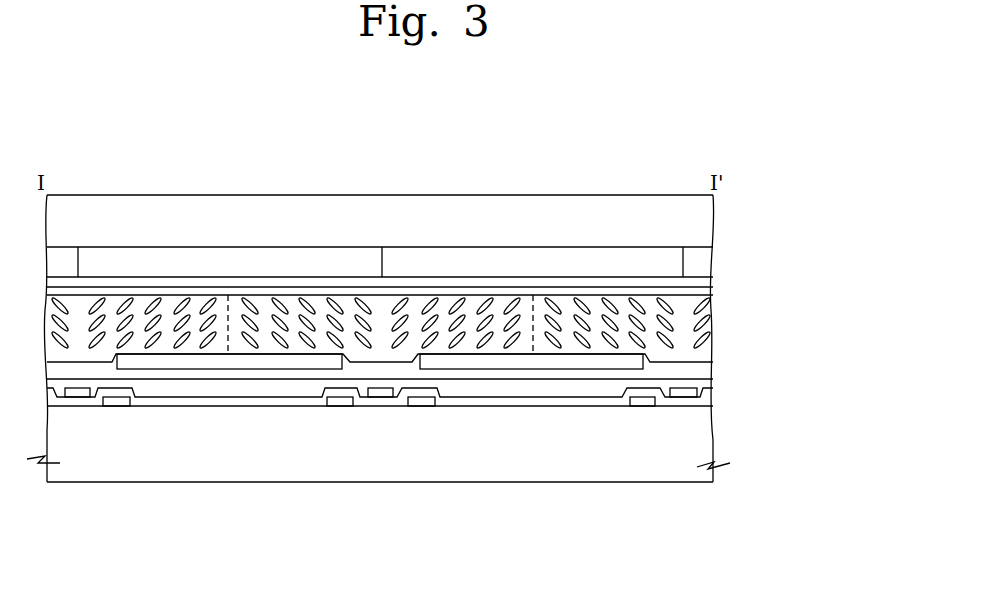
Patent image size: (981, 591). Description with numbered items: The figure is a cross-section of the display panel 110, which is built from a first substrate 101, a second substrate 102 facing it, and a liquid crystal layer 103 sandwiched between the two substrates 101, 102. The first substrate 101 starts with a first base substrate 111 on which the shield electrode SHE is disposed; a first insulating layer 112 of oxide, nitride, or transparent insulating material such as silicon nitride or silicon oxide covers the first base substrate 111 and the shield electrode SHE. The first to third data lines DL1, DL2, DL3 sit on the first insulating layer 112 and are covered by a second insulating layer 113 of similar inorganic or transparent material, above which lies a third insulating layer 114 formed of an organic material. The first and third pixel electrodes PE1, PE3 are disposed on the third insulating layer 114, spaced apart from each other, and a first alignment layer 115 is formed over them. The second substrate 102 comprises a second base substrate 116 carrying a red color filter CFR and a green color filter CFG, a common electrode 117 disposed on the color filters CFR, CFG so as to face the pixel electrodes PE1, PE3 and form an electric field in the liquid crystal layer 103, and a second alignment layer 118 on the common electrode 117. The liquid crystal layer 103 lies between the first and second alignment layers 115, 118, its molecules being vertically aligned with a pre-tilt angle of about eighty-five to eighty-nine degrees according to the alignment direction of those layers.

The display panel 110 is at (655, 136).
The first substrate 101 is at (789, 352).
The second substrate 102 is at (789, 215).
The liquid crystal layer 103 is at (700, 320).
The first base substrate 111 is at (700, 443).
The first insulating layer 112 is at (700, 403).
The second insulating layer 113 is at (700, 384).
The third insulating layer 114 is at (700, 374).
The first alignment layer 115 is at (700, 365).
The second base substrate 116 is at (700, 223).
The common electrode 117 is at (700, 282).
The second alignment layer 118 is at (700, 292).
The red color filter CFR is at (214, 262).
The green color filter CFG is at (547, 262).
The first data line DL1 is at (76, 397).
The second data line DL2 is at (380, 397).
The third data line DL3 is at (682, 397).
The shield electrode SHE is at (118, 406).
The first pixel electrode PE1 is at (226, 369).
The third pixel electrode PE3 is at (530, 369).